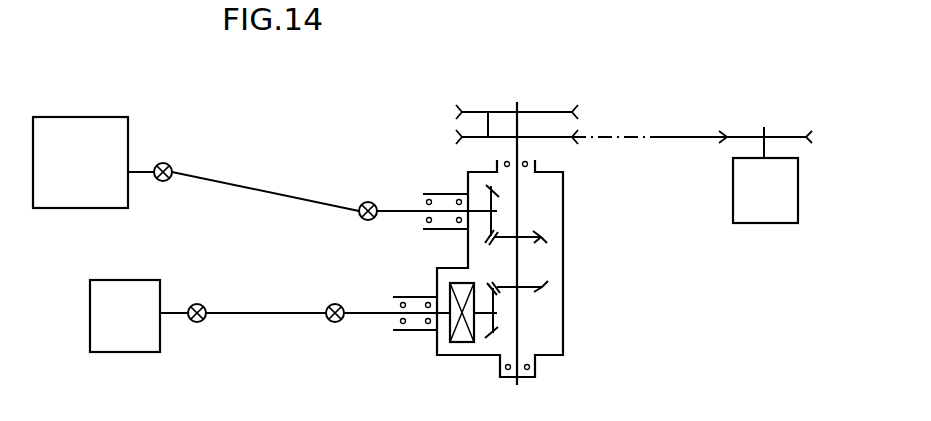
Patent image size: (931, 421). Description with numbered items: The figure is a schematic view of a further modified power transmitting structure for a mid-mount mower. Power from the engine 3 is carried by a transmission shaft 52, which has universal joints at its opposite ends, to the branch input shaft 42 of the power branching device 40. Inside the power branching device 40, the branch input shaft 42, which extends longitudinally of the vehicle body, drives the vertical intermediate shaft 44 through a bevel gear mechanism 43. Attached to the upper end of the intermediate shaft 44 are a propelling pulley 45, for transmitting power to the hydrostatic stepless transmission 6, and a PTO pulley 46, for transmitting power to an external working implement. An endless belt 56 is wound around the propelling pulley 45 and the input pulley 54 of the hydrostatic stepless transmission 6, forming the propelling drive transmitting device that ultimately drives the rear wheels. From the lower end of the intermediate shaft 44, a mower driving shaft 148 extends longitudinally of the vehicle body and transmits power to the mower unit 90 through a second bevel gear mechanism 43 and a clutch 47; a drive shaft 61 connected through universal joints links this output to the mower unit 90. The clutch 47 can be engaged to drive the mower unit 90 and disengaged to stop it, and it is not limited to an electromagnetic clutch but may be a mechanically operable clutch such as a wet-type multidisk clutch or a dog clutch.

The engine 3 is at (80, 162).
The hydrostatic stepless transmission (HST) 6 is at (765, 190).
The power branching device 40 is at (566, 322).
The branch input shaft 42 is at (392, 208).
The bevel gear mechanism 43 is at (529, 213).
The vertical intermediate shaft 44 is at (519, 262).
The propelling pulley 45 is at (487, 110).
The PTO pulley 46 is at (553, 112).
The clutch 47 is at (463, 341).
The transmission shaft 52 is at (245, 187).
The input pulley 54 is at (787, 133).
The endless belt 56 is at (675, 138).
The drive shaft 61 is at (265, 314).
The mower unit 90 is at (125, 316).
The mower driving shaft 148 is at (368, 316).